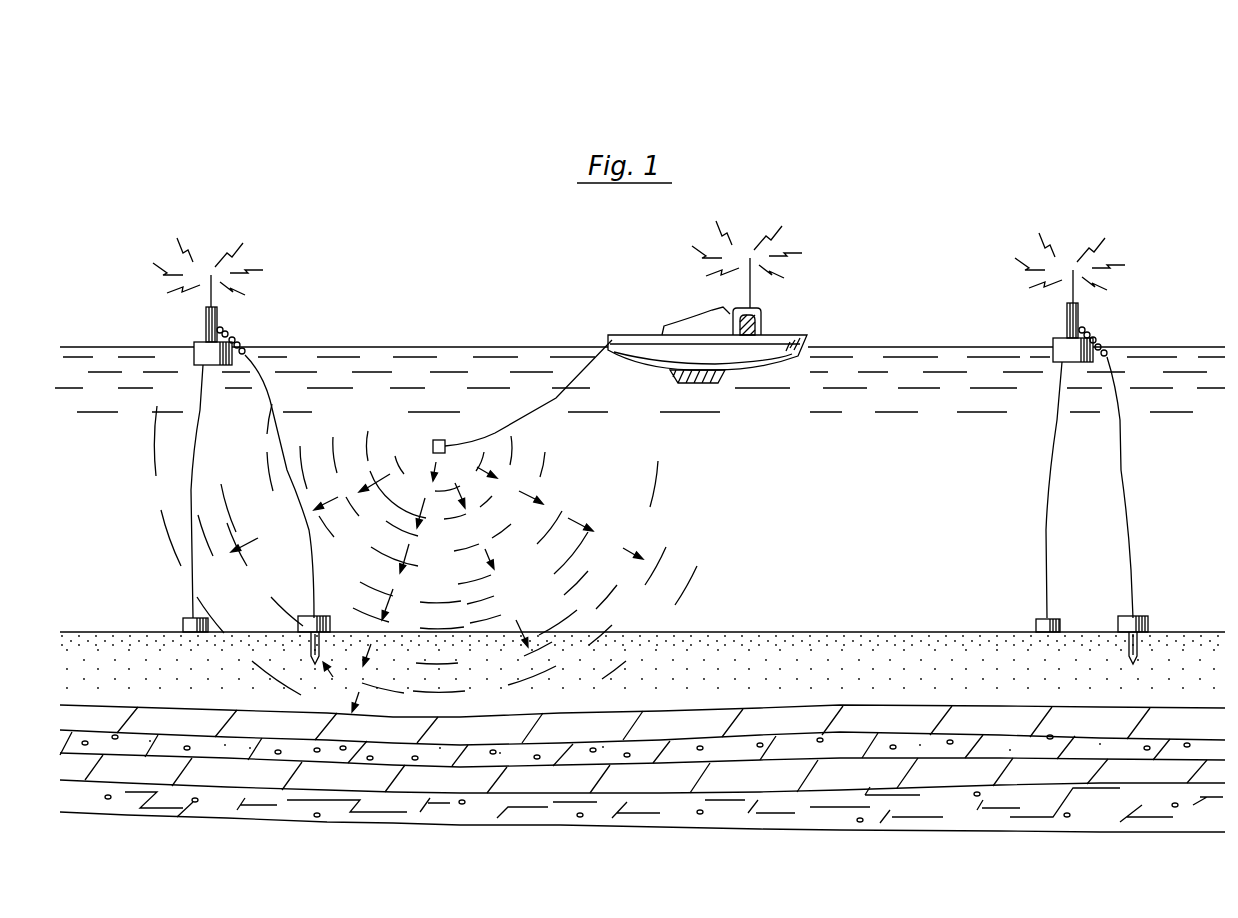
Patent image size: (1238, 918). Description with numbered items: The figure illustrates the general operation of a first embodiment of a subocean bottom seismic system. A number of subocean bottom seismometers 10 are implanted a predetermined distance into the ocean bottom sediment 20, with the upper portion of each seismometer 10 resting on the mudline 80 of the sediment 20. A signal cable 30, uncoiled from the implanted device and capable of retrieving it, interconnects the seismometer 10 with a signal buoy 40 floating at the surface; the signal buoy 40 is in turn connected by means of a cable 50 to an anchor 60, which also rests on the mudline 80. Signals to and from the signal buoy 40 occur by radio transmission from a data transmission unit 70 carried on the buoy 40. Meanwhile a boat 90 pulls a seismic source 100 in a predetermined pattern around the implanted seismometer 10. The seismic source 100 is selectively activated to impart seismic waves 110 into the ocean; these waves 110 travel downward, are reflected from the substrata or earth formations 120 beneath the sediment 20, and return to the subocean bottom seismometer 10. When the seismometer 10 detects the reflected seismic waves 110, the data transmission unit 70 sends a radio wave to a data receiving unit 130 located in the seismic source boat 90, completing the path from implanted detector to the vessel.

The subocean bottom seismometer 10 is at (297, 617).
The ocean bottom sediment 20 is at (190, 689).
The signal cable 30 is at (313, 572).
The signal buoy 40 is at (197, 341).
The cable 50 is at (193, 469).
The anchor 60 is at (183, 618).
The data transmission unit 70 is at (218, 316).
The mudline 80 is at (720, 632).
The boat 90 is at (779, 332).
The seismic source 100 is at (435, 440).
The seismic waves 110 is at (402, 597).
The earth formations 120 is at (285, 737).
The data receiving unit 130 is at (723, 312).